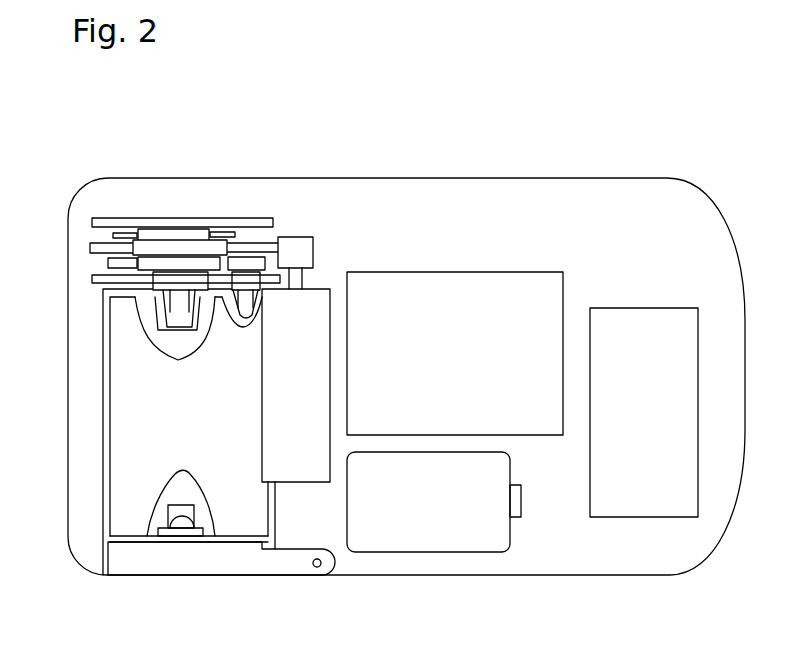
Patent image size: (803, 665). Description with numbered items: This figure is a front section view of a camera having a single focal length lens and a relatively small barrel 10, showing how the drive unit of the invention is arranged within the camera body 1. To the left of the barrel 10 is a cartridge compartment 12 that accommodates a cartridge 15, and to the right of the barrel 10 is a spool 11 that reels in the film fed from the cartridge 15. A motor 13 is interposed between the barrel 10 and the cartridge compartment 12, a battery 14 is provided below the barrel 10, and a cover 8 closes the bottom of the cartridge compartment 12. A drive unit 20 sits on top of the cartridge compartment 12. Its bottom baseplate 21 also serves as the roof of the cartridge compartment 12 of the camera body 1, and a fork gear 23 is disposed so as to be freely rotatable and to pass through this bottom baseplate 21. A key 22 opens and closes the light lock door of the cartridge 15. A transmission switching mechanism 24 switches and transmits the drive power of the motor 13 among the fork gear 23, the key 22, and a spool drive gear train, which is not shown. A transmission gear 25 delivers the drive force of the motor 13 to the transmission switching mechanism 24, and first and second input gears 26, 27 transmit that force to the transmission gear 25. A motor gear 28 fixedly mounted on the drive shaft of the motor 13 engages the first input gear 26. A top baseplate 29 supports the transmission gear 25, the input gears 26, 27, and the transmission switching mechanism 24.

The camera body 1 is at (465, 176).
The cover 8 is at (230, 563).
The barrel 10 is at (518, 300).
The spool 11 is at (692, 335).
The cartridge compartment 12 is at (107, 370).
The motor 13 is at (313, 470).
The battery 14 is at (482, 540).
The cartridge 15 is at (125, 523).
The drive unit 20 is at (122, 211).
The bottom baseplate 21 is at (92, 278).
The key 22 is at (238, 263).
The fork gear 23 is at (162, 262).
The transmission switching mechanism 24 is at (200, 228).
The transmission gear 25 is at (188, 247).
The first input gear 26 is at (268, 247).
The second input gear 27 is at (90, 248).
The motor gear 28 is at (307, 242).
The top baseplate 29 is at (100, 218).